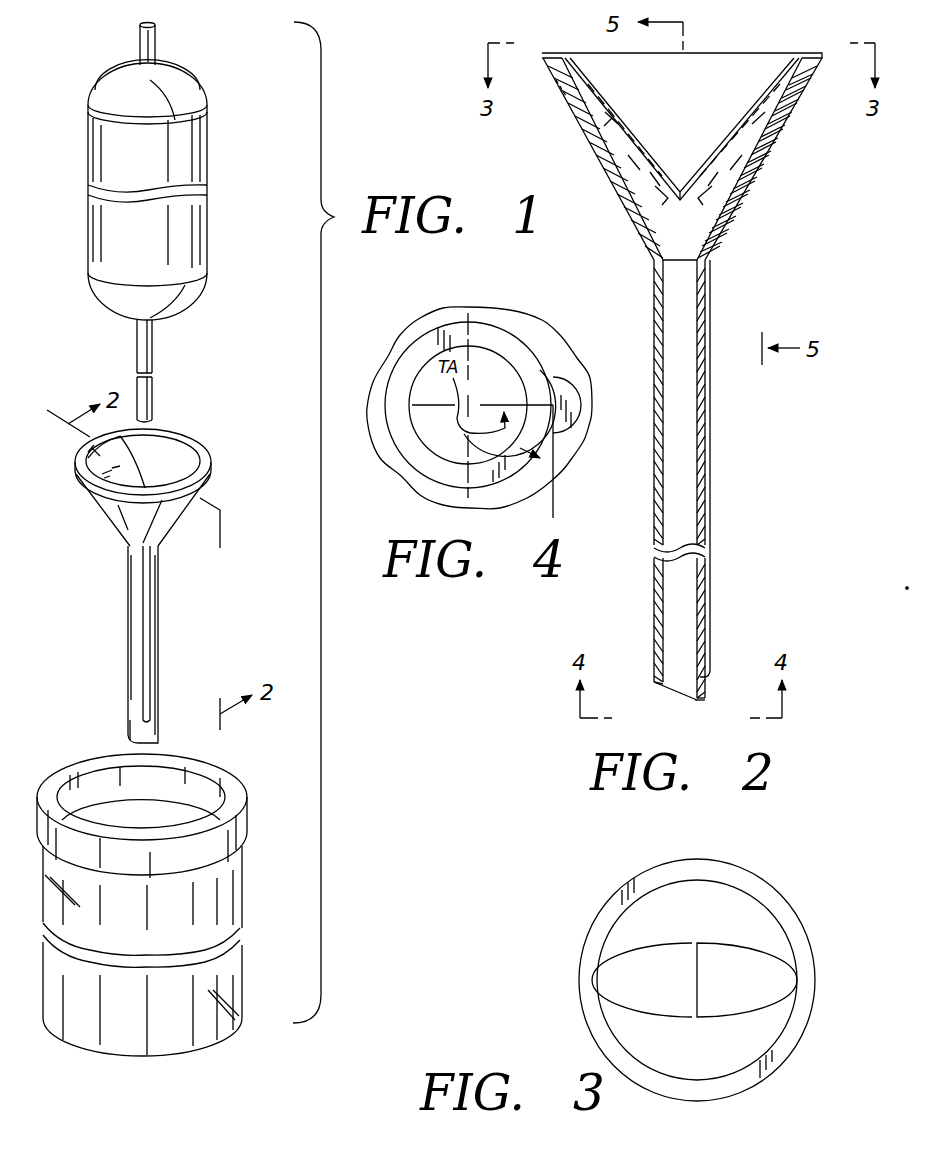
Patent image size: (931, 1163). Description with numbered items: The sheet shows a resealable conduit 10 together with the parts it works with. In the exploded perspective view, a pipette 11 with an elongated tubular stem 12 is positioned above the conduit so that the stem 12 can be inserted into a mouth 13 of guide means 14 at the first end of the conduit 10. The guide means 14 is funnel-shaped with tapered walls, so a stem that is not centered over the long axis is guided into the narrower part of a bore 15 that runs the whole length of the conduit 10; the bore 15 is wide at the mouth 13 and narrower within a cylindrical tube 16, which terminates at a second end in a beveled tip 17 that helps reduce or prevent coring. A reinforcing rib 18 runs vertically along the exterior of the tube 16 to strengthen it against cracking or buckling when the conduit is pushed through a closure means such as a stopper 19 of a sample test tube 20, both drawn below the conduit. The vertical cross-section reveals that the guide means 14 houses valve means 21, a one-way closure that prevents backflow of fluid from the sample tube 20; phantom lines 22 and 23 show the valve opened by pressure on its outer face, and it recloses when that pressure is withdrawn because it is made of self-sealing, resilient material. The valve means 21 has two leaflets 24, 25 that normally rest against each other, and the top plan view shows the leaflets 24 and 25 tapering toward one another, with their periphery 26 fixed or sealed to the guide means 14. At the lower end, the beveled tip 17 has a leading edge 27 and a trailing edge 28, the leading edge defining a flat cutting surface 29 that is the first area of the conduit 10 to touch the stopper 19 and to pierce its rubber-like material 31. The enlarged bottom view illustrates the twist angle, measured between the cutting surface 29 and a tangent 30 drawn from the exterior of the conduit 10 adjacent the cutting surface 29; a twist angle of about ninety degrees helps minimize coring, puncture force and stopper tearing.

In FIG. 1, the resealable conduit 10 is at (106, 526).
In FIG. 1, the pipette 11 is at (212, 140).
In FIG. 1, the stem 12 is at (137, 345).
In FIG. 1, the mouth 13 is at (133, 483).
In FIG. 2, the mouth 13 is at (667, 131).
In FIG. 1, the guide means 14 is at (102, 500).
In FIG. 2, the guide means 14 is at (566, 104).
In FIG. 2, the bore 15 is at (690, 440).
In FIG. 1, the cylindrical tube 16 is at (141, 644).
In FIG. 2, the cylindrical tube 16 is at (679, 499).
In FIG. 1, the beveled tip 17 is at (134, 740).
In FIG. 2, the beveled tip 17 is at (673, 698).
In FIG. 1, the reinforcing rib 18 is at (150, 628).
In FIG. 2, the reinforcing rib 18 is at (711, 513).
In FIG. 1, the stopper 19 is at (172, 894).
In FIG. 1, the sample test tube 20 is at (250, 948).
In FIG. 2, the valve means 21 is at (661, 139).
In FIG. 2, the phantom line 22 is at (608, 198).
In FIG. 2, the phantom line 23 is at (764, 186).
In FIG. 1, the leaflet 24 is at (95, 458).
In FIG. 2, the leaflet 24 is at (630, 130).
In FIG. 3, the leaflet 24 is at (632, 957).
In FIG. 2, the leaflet 25 is at (740, 130).
In FIG. 3, the leaflet 25 is at (760, 958).
In FIG. 2, the periphery 26 is at (553, 52).
In FIG. 3, the periphery 26 is at (603, 912).
In FIG. 2, the leading edge 27 is at (701, 700).
In FIG. 2, the trailing edge 28 is at (663, 689).
In FIG. 2, the cutting surface 29 is at (698, 703).
In FIG. 4, the cutting surface 29 is at (547, 375).
In FIG. 4, the tangent 30 is at (553, 503).
In FIG. 1, the rubber-like material 31 is at (249, 818).